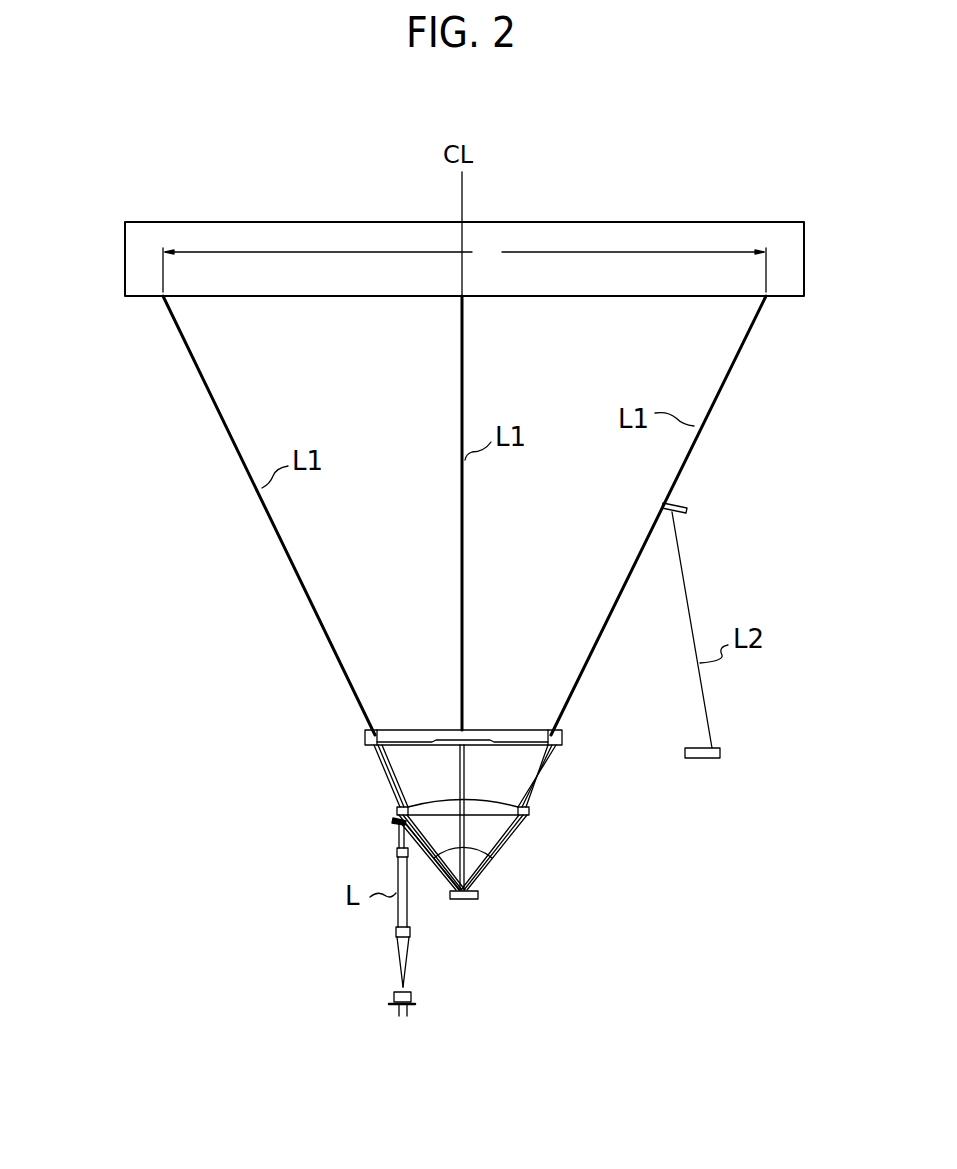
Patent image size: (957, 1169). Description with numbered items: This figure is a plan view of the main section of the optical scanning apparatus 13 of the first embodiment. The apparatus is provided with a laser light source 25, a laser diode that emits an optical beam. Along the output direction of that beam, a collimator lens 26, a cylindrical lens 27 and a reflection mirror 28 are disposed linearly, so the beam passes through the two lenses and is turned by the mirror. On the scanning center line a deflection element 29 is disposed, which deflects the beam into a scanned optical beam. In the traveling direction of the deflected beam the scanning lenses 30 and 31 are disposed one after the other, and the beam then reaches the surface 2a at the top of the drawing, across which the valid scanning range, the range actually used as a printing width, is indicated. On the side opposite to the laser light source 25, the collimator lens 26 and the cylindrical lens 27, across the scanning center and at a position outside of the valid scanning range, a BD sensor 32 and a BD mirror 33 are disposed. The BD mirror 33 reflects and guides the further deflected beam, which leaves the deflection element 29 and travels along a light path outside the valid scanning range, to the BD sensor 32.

The screen (projection surface) 2a is at (464, 225).
The optical scanning apparatus 13 is at (227, 522).
The laser light source 25 is at (413, 997).
The collimator lens 26 is at (395, 934).
The cylindrical lens 27 is at (395, 854).
The reflection mirror 28 is at (388, 819).
The deflection element 29 is at (465, 900).
The scanning lens 30 is at (492, 803).
The scanning lens 31 is at (512, 728).
The BD sensor 32 is at (700, 760).
The BD mirror 33 is at (686, 510).